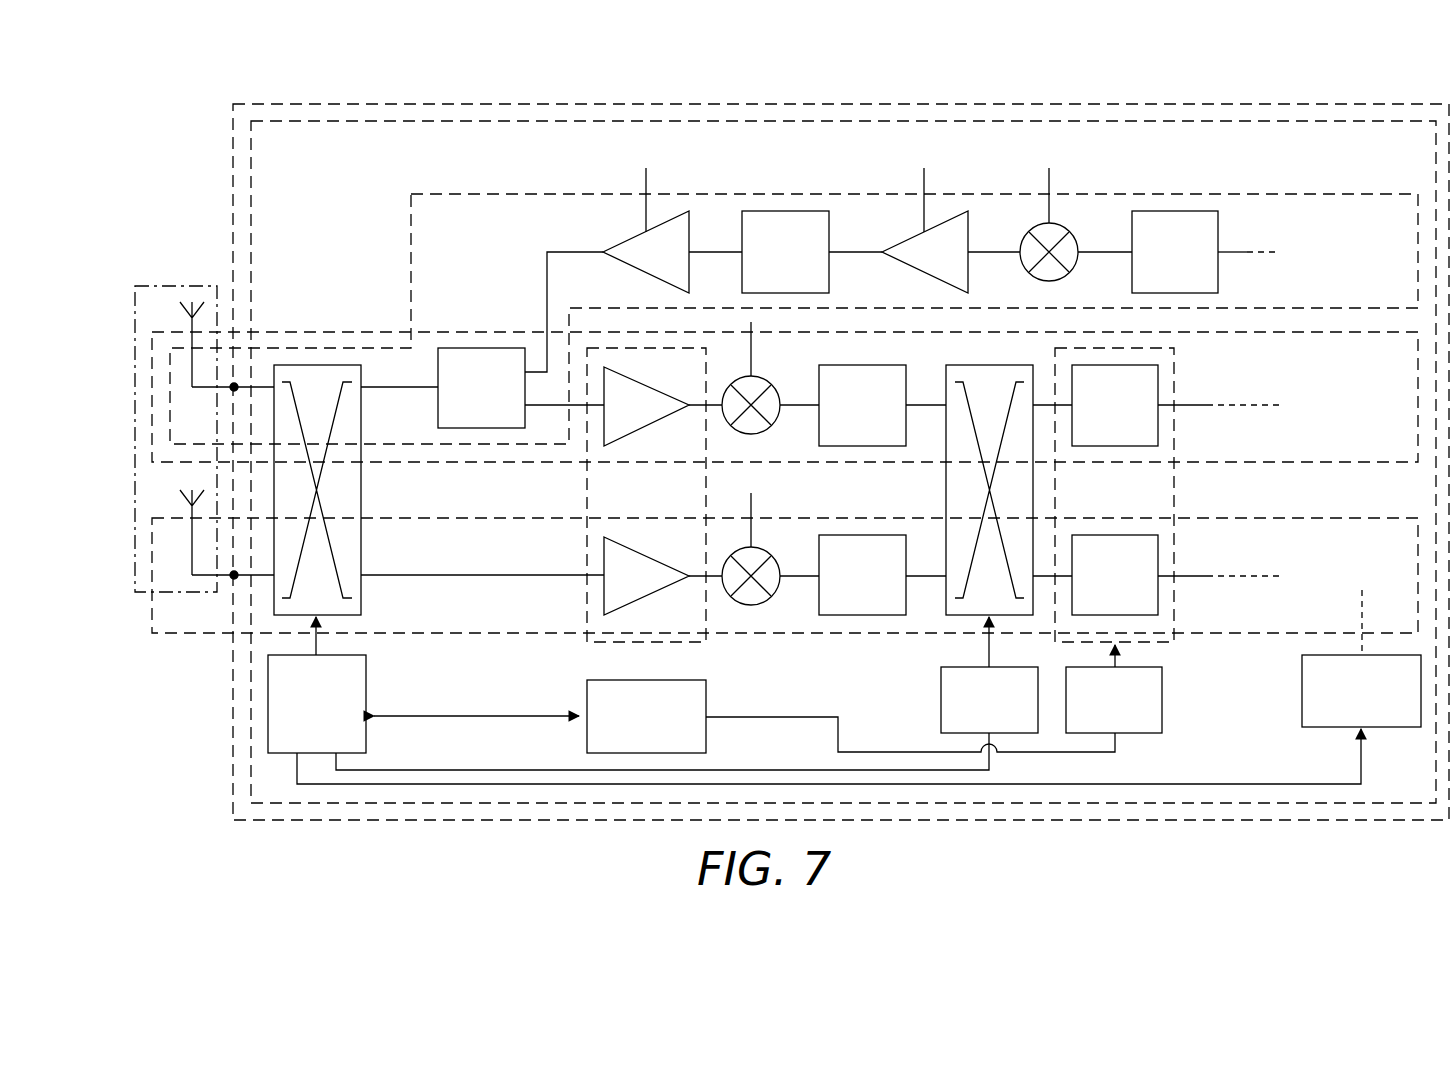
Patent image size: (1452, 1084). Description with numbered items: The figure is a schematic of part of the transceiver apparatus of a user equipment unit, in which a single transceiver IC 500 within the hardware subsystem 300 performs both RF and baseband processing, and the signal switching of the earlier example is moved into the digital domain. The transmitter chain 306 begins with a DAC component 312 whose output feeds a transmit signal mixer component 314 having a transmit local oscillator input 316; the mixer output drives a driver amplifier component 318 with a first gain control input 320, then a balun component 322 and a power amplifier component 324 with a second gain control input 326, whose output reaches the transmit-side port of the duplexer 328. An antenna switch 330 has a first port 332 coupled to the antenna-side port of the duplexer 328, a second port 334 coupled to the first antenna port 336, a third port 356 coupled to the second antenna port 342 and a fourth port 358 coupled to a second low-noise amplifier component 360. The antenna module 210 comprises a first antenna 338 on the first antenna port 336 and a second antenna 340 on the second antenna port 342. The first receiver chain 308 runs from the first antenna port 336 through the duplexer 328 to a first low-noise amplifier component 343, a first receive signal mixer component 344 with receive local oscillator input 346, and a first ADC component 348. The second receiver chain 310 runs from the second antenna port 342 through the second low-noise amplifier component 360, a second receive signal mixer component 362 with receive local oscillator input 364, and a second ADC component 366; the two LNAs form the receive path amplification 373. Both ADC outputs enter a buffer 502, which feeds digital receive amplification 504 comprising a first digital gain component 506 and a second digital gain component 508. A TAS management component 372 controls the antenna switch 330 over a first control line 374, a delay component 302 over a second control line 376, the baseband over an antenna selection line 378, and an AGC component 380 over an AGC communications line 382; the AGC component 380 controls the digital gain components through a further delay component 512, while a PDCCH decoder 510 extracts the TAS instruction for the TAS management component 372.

The hardware subsystem 300 is at (239, 104).
The transceiver IC 500 is at (334, 121).
The antenna module 210 is at (140, 286).
The transmitter chain 306 is at (750, 193).
The first receiver chain 308 is at (1366, 462).
The second receiver chain 310 is at (1208, 634).
The Digital-to-Analogue Converter component 312 is at (1206, 252).
The transmit signal mixer component 314 is at (1064, 230).
The transmit local oscillator input 316 is at (1049, 175).
The driver amplifier component 318 is at (951, 252).
The first gain control input 320 is at (924, 175).
The balun component 322 is at (812, 252).
The power amplifier component 324 is at (672, 252).
The second gain control input 326 is at (646, 175).
The duplexer 328 is at (482, 340).
The antenna switch 330 is at (362, 492).
The first port 332 is at (368, 366).
The second port 334 is at (270, 364).
The first antenna port 336 is at (232, 390).
The first antenna 338 is at (192, 374).
The second antenna 340 is at (192, 560).
The second antenna port 342 is at (234, 580).
The first low-noise amplifier component 343 is at (631, 444).
The first receive signal mixer component 344 is at (726, 420).
The receive local oscillator input 346 is at (752, 348).
The first Analogue-to-Digital Converter component 348 is at (882, 405).
The third port 356 is at (274, 578).
The fourth port 358 is at (362, 575).
The second low-noise amplifier component 360 is at (604, 552).
The second receive signal mixer component 362 is at (751, 605).
The receive local oscillator input 364 is at (752, 498).
The second Analogue-to-Digital Converter component 366 is at (882, 575).
The TAS management component 372 is at (268, 736).
The receive path amplification 373 is at (586, 496).
The first control line 374 is at (320, 642).
The second control line 376 is at (422, 769).
The antenna selection line 378 is at (1218, 784).
The Automatic Gain Control component 380 is at (851, 716).
The AGC communications line 382 is at (490, 716).
The delay component 302 is at (989, 675).
The buffer 502 is at (1034, 490).
The digital receive amplification 504 is at (1175, 370).
The first digital gain component 506 is at (1176, 405).
The second digital gain component 508 is at (1176, 575).
The PDCCH decoder 510 is at (1361, 691).
The further delay component 512 is at (1114, 689).